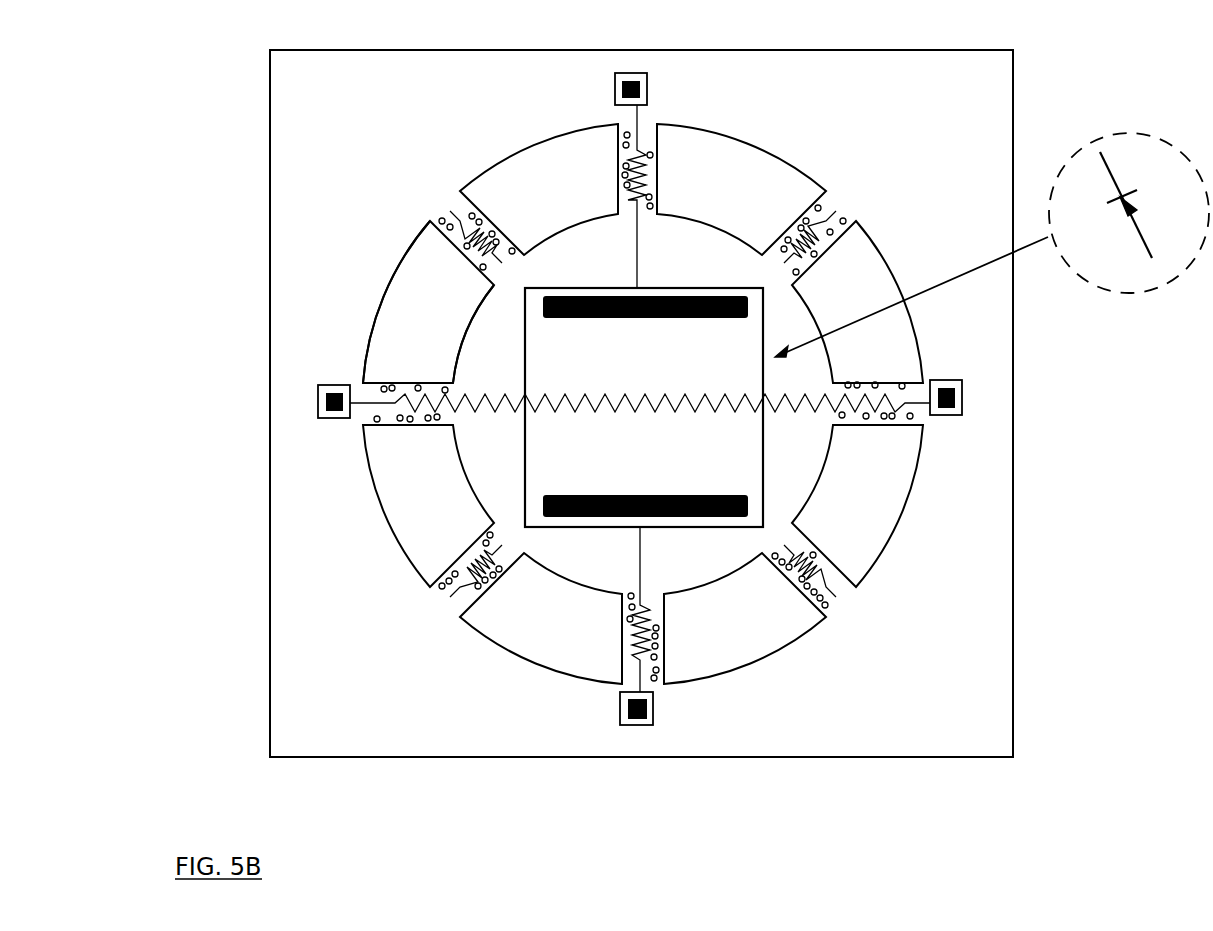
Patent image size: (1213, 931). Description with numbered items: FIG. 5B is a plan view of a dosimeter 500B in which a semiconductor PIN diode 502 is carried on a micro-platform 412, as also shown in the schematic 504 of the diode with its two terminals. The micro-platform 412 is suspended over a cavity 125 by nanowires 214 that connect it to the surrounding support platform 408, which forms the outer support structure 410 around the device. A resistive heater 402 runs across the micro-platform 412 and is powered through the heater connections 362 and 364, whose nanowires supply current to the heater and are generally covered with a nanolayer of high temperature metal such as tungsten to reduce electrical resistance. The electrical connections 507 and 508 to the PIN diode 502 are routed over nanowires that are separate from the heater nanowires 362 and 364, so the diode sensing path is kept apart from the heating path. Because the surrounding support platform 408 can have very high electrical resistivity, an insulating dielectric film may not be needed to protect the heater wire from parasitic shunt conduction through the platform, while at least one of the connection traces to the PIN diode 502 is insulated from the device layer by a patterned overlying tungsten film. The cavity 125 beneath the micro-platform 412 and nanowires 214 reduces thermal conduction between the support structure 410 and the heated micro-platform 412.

The stress sensor with Hall plate 500B is at (184, 50).
The surrounding support platform 408 is at (624, 401).
The cavity 125 is at (572, 193).
The surrounding support structure 410 is at (413, 240).
The micro-platform 412 is at (462, 347).
The nanowires 214 is at (465, 552).
The resistive heater 402 is at (636, 398).
The semiconductor PIN diode 502 is at (763, 440).
The schematic 504 is at (1115, 293).
The electrical connection 507 is at (632, 728).
The electrical connection 508 is at (647, 88).
The heater nanowire pad 362 is at (318, 398).
The heater nanowire pad 364 is at (962, 400).